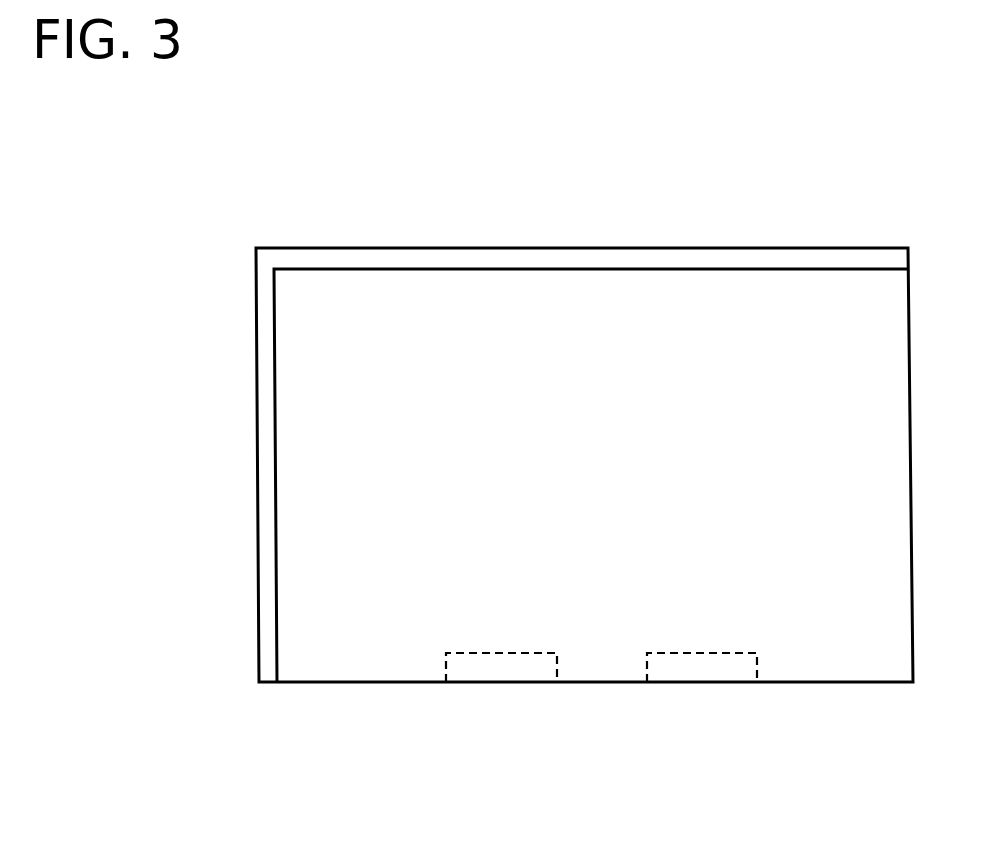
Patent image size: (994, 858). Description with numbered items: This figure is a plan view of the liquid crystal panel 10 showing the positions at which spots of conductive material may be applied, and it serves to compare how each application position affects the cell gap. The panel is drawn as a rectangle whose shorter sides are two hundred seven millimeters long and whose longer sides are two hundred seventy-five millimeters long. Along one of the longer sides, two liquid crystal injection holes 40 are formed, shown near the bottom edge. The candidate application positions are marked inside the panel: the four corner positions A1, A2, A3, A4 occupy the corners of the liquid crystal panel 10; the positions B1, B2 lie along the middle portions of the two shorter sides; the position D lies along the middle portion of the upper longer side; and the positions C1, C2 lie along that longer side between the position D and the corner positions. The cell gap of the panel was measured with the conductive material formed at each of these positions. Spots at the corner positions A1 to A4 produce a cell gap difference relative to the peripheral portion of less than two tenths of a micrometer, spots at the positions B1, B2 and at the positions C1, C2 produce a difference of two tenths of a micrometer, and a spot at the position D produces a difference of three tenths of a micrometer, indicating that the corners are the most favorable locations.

The liquid crystal panel 10 is at (327, 243).
The liquid crystal injection holes 40 is at (709, 682).
The corner position A1 is at (298, 659).
The corner position A2 is at (298, 298).
The corner position A3 is at (874, 297).
The corner position A4 is at (880, 660).
The shorter-side middle position B1 is at (298, 477).
The shorter-side middle position B2 is at (875, 477).
The intermediate longer-side position C1 is at (438, 297).
The intermediate longer-side position C2 is at (746, 297).
The longer-side middle position D is at (589, 297).